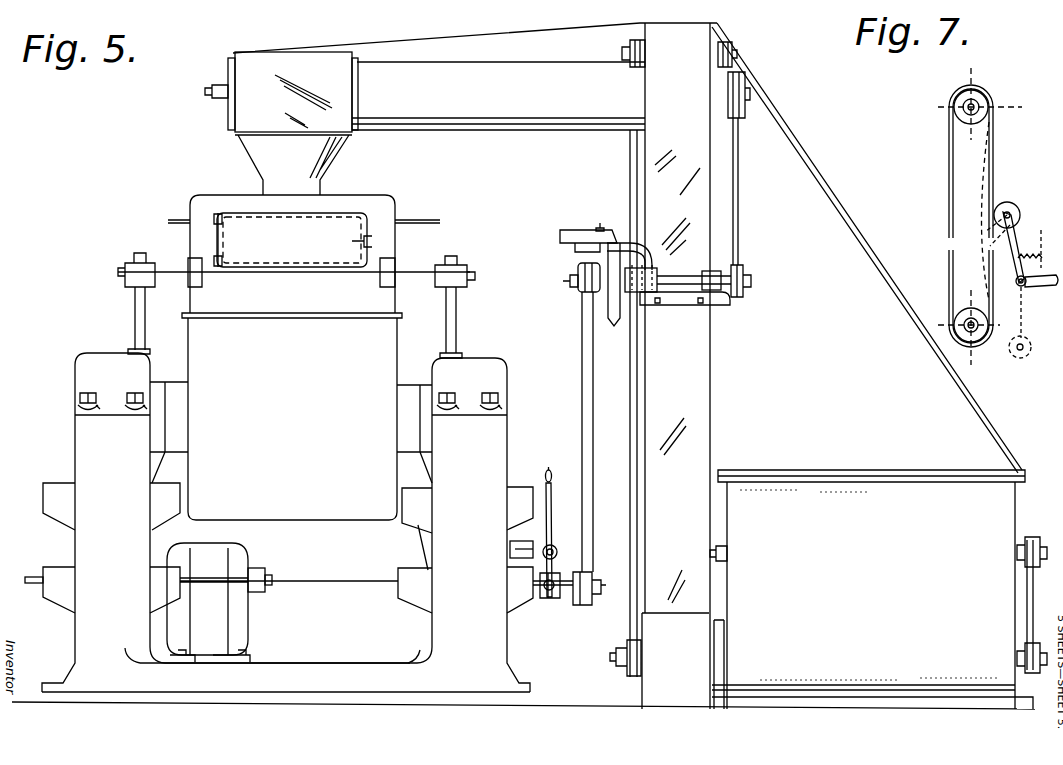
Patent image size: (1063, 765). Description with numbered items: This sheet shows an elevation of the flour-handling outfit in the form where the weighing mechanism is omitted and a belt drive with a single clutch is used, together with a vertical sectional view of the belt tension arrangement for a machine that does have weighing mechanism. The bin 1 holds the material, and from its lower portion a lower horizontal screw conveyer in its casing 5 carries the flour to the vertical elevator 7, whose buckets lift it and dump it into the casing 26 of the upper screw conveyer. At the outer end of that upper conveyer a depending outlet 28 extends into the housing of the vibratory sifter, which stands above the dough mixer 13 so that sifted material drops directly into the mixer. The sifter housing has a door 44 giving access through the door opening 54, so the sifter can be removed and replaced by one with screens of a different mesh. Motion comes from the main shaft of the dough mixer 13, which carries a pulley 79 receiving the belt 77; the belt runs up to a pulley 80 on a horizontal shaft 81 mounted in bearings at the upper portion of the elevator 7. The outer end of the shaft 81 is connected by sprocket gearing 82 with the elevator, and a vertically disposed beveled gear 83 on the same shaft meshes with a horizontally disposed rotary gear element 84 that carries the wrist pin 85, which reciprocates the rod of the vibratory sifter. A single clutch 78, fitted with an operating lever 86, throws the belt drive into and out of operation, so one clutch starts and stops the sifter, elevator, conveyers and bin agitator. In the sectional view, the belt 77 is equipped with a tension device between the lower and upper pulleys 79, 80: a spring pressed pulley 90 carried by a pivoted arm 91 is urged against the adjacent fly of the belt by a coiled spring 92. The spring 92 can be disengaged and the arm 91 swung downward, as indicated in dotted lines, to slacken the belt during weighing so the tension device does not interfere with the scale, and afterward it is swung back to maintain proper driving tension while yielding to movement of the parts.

In FIG. 5, the bin 1 is at (902, 569).
In FIG. 5, the casing 5 is at (905, 702).
In FIG. 5, the vertical elevator 7 is at (832, 366).
In FIG. 5, the dough mixer 13 is at (292, 416).
In FIG. 5, the casing 26 is at (507, 108).
In FIG. 5, the depending outlet 28 is at (262, 151).
In FIG. 5, the door 44 is at (300, 251).
In FIG. 5, the door opening 54 is at (357, 240).
In FIG. 5, the belt 77 is at (585, 374).
In FIG. 7, the belt 77 is at (994, 206).
In FIG. 5, the clutch 78 is at (553, 604).
In FIG. 5, the pulley 79 is at (590, 606).
In FIG. 7, the pulley 79 is at (975, 336).
In FIG. 5, the pulley 80 is at (578, 290).
In FIG. 7, the pulley 80 is at (985, 105).
In FIG. 5, the horizontal shaft 81 is at (563, 281).
In FIG. 5, the sprocket gearing 82 is at (742, 273).
In FIG. 5, the beveled gear 83 is at (612, 305).
In FIG. 5, the rotary gear element 84 is at (560, 234).
In FIG. 5, the wrist pin 85 is at (599, 224).
In FIG. 5, the operating lever 86 is at (548, 481).
In FIG. 7, the spring pressed pulley 90 is at (1020, 216).
In FIG. 7, the pivoted arm 91 is at (1026, 285).
In FIG. 7, the coiled spring 92 is at (1030, 249).